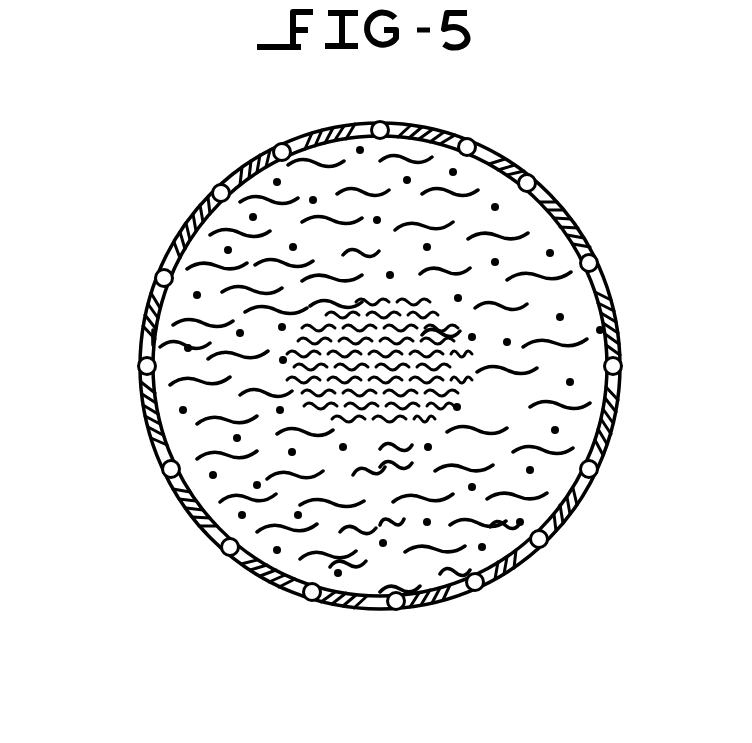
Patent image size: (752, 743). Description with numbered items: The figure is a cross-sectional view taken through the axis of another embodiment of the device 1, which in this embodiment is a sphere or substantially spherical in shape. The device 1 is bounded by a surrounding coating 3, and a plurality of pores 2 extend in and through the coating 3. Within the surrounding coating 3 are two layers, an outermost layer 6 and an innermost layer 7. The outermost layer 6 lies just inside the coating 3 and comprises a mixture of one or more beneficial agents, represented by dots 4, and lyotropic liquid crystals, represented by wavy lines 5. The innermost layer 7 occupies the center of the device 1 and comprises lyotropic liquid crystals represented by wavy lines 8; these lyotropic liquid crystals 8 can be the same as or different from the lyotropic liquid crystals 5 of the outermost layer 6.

The device 1 is at (553, 198).
The pores 2 is at (158, 272).
The coating 3 is at (142, 329).
The beneficial agents 4 is at (242, 517).
The lyotropic liquid crystals 5 is at (423, 572).
The outermost layer 6 is at (570, 363).
The innermost layer 7 is at (412, 387).
The lyotropic liquid crystals 8 is at (438, 290).